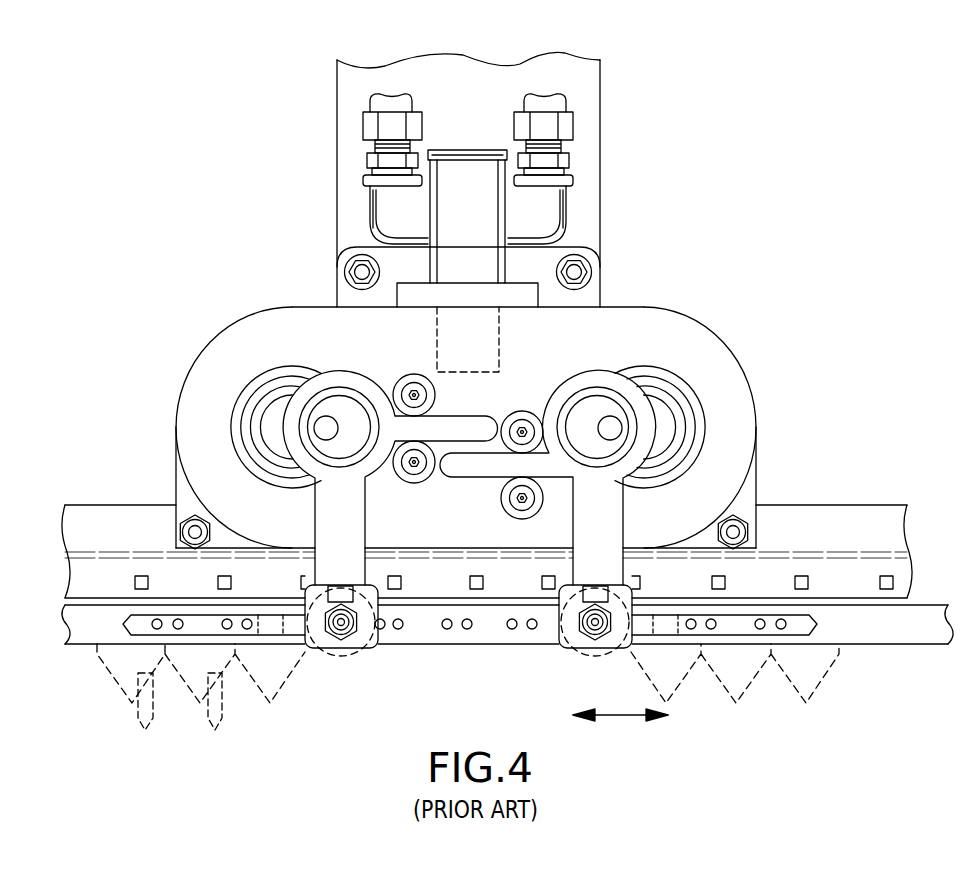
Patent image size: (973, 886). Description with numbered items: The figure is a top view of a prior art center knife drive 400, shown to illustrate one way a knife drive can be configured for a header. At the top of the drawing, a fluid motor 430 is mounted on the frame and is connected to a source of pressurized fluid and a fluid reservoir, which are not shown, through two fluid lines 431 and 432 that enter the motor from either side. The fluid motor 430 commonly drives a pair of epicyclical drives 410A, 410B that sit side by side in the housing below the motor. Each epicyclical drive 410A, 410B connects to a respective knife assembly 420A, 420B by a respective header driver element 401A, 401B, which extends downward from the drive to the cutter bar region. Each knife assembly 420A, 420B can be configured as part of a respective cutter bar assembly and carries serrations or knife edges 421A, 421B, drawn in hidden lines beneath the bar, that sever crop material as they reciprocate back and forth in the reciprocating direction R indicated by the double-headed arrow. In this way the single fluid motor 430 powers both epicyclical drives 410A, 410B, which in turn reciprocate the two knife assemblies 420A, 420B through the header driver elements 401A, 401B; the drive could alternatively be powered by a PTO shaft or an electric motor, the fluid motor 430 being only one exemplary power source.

The center knife drive 400 is at (773, 121).
The fluid motor 430 is at (477, 158).
The fluid line 431 is at (371, 135).
The fluid line 432 is at (566, 122).
The epicyclical drive 410A is at (212, 428).
The epicyclical drive 410B is at (726, 428).
The header driver element 401A is at (357, 637).
The header driver element 401B is at (587, 637).
The knife assembly 420A is at (285, 640).
The knife assembly 420B is at (818, 641).
The knife edges 421A is at (218, 678).
The knife edges 421B is at (747, 690).
The reciprocating direction R is at (619, 718).